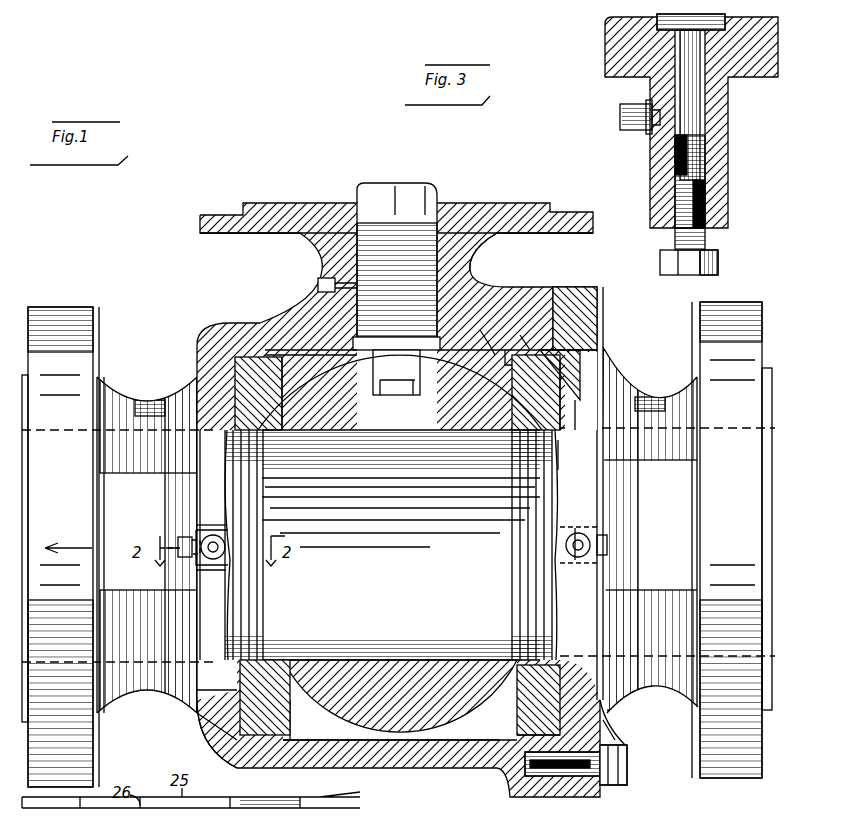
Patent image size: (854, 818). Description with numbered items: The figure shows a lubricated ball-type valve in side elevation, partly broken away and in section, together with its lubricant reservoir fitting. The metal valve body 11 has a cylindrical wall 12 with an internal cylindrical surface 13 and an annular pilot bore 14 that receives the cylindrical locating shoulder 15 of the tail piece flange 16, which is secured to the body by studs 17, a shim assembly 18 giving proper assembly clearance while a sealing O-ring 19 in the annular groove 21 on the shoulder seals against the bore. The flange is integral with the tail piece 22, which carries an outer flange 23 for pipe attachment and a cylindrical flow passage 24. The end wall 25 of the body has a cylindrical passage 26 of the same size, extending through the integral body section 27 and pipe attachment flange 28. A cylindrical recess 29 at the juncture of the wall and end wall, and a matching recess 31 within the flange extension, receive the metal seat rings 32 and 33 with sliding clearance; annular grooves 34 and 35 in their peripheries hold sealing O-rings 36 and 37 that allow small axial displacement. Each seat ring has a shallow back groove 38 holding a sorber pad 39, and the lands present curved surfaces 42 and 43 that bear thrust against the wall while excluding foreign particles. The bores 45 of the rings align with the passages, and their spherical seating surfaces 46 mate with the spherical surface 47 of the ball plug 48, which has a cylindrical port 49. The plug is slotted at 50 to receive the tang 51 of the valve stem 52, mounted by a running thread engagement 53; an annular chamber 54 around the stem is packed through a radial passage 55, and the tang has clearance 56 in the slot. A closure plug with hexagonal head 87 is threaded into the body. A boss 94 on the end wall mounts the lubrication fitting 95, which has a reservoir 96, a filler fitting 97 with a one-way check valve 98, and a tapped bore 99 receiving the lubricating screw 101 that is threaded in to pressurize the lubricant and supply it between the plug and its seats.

In FIG. 1, the valve body 11 is at (530, 282).
In FIG. 1, the cylindrical wall 12 is at (438, 765).
In FIG. 1, the internal cylindrical surface 13 is at (487, 334).
In FIG. 1, the annular pilot bore 14 is at (480, 755).
In FIG. 1, the cylindrical locating shoulder 15 is at (517, 319).
In FIG. 1, the tail piece flange 16 is at (597, 292).
In FIG. 1, the studs 17 is at (627, 765).
In FIG. 1, the shim assembly 18 is at (570, 790).
In FIG. 1, the sealing O-ring 19 is at (530, 330).
In FIG. 1, the annular groove 21 is at (597, 312).
In FIG. 1, the tail piece 22 is at (655, 398).
In FIG. 1, the outer flange 23 is at (745, 305).
In FIG. 1, the cylindrical flow passage 24 is at (575, 455).
In FIG. 1, the end wall 25 is at (197, 377).
In FIG. 1, the cylindrical passage 26 is at (205, 440).
In FIG. 1, the integral body section 27 is at (122, 405).
In FIG. 1, the pipe attachment flange 28 is at (72, 312).
In FIG. 1, the cylindrical recess 29 is at (205, 758).
In FIG. 1, the cylindrical recess 31 is at (565, 364).
In FIG. 1, the valve seat ring 32 is at (282, 380).
In FIG. 1, the valve seat ring 33 is at (498, 360).
In FIG. 1, the annular groove 34 is at (352, 350).
In FIG. 1, the annular groove 35 is at (554, 391).
In FIG. 1, the sealing O-ring 36 is at (252, 357).
In FIG. 1, the sealing O-ring 37 is at (520, 715).
In FIG. 1, the back surface groove 38 is at (614, 668).
In FIG. 1, the sorber pad 39 is at (628, 370).
In FIG. 1, the curved surface 42 is at (530, 443).
In FIG. 1, the curved surface 43 is at (237, 722).
In FIG. 1, the bore 45 is at (310, 443).
In FIG. 1, the spherically curved seating surface 46 is at (576, 395).
In FIG. 1, the spherically curved mating surface 47 is at (465, 725).
In FIG. 1, the ball plug 48 is at (330, 712).
In FIG. 1, the cylindrical port 49 is at (440, 658).
In FIG. 1, the arcuate slot 50 is at (428, 392).
In FIG. 1, the tang 51 is at (398, 385).
In FIG. 1, the valve stem 52 is at (438, 190).
In FIG. 1, the running thread engagement 53 is at (455, 215).
In FIG. 1, the annular chamber 54 is at (488, 268).
In FIG. 1, the radial passage 55 is at (318, 285).
In FIG. 1, the clearance 56 is at (373, 368).
In FIG. 1, the hexagonal head 87 is at (183, 537).
In FIG. 1, the boss 94 is at (208, 522).
In FIG. 3, the boss 94 is at (605, 32).
In FIG. 1, the lubrication fitting 95 is at (196, 570).
In FIG. 3, the lubrication fitting 95 is at (720, 108).
In FIG. 3, the reservoir 96 is at (700, 118).
In FIG. 3, the filler fitting 97 is at (636, 130).
In FIG. 3, the one-way check valve 98 is at (638, 104).
In FIG. 3, the tapped bore 99 is at (705, 165).
In FIG. 3, the lubricating screw 101 is at (718, 255).